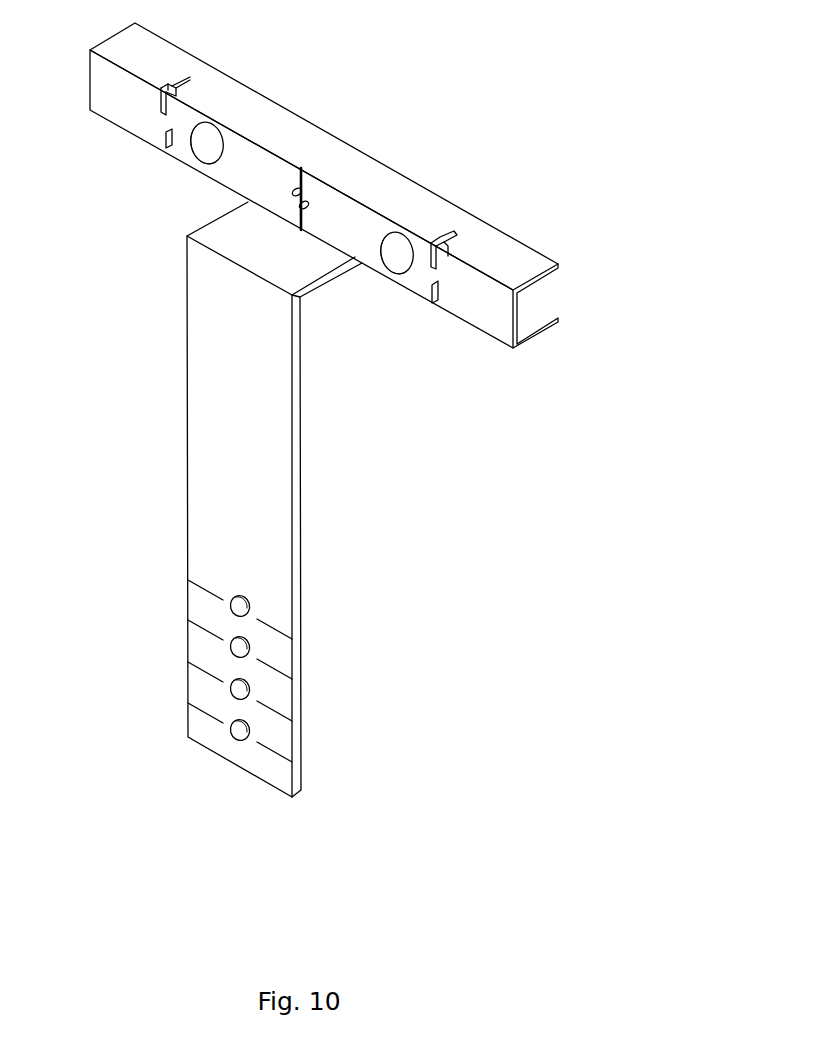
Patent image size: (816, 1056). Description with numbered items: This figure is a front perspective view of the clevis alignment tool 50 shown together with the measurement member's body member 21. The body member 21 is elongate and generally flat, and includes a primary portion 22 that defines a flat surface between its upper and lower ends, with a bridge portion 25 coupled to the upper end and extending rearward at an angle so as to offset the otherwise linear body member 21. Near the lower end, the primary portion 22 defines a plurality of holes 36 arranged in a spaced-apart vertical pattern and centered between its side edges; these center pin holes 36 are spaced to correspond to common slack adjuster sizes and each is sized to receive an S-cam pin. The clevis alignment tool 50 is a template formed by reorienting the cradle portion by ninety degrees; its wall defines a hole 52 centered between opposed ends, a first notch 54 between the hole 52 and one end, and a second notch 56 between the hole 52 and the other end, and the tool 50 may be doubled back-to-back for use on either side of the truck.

The body member 21 is at (206, 499).
The primary portion 22 is at (240, 499).
The bridge portion 25 is at (238, 239).
The holes 36 is at (237, 690).
The clevis alignment tool 50 is at (596, 289).
The hole 52 is at (207, 143).
The first notch 54 is at (158, 143).
The second notch 56 is at (171, 150).